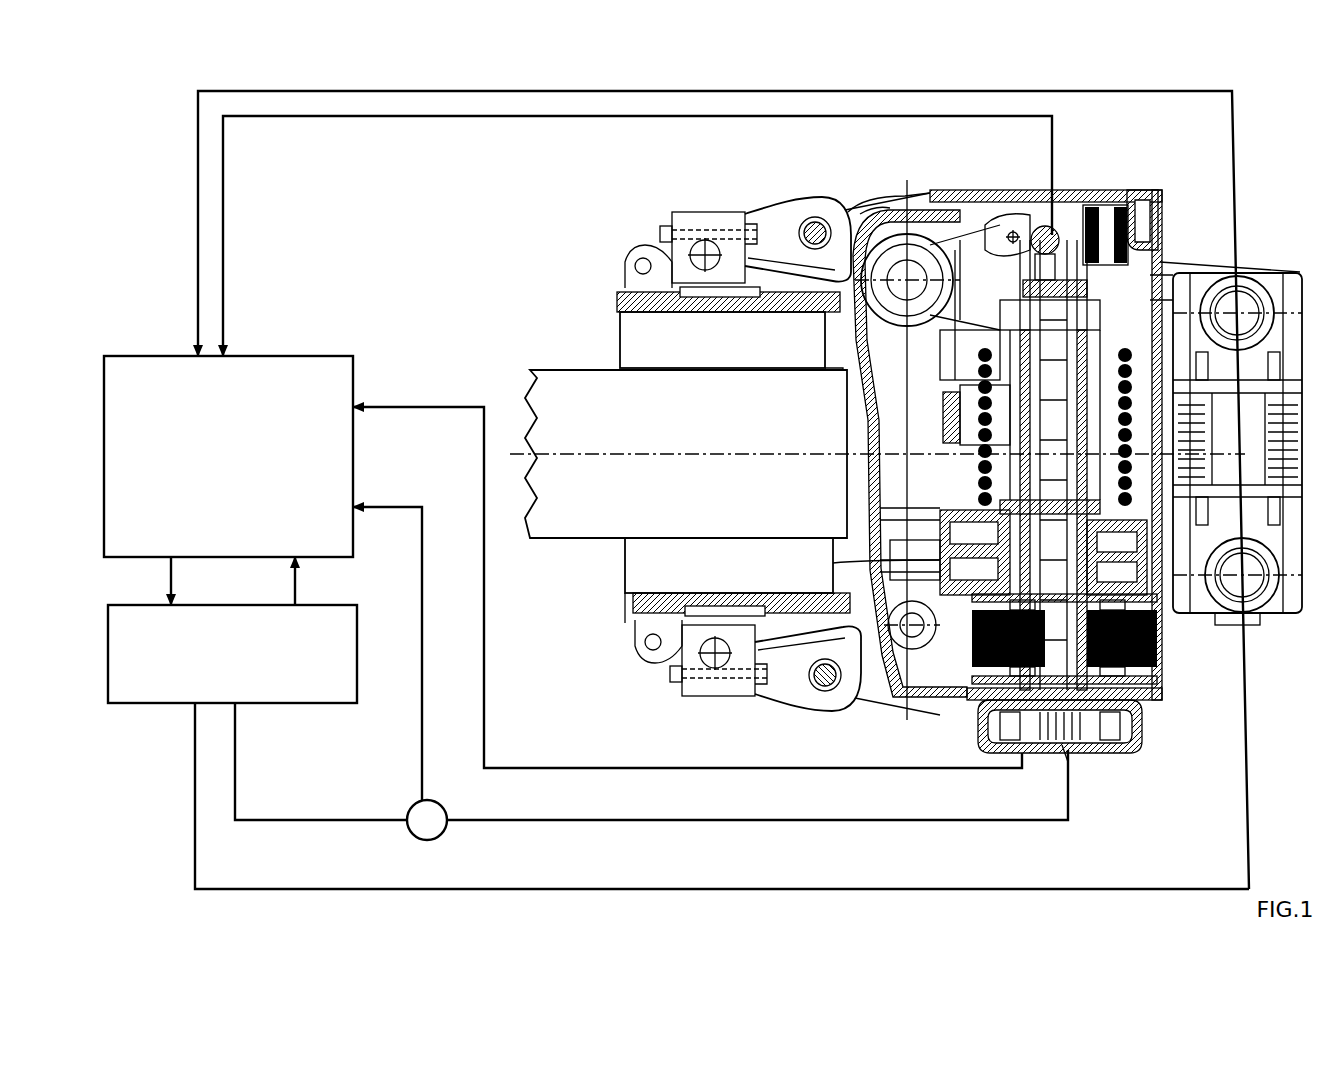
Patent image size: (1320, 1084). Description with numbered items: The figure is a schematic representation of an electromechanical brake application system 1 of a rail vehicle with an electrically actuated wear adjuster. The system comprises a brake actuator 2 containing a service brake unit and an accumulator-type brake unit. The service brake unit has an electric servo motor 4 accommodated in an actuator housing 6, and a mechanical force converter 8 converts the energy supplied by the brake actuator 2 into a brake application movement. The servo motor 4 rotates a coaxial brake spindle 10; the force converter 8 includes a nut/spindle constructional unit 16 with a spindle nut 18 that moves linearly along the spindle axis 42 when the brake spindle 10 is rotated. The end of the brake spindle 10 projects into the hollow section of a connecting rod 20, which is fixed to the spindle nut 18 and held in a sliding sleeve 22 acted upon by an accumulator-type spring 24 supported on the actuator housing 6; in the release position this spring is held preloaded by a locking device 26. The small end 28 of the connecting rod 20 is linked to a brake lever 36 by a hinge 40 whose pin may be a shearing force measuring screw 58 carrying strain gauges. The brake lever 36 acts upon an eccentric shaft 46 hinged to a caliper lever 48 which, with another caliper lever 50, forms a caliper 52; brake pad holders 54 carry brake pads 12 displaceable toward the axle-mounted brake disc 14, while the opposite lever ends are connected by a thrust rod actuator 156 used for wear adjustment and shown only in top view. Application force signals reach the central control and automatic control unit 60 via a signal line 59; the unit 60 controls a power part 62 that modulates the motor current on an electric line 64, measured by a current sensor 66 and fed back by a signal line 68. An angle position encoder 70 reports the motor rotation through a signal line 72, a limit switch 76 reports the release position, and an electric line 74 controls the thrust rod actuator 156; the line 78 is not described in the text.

The electromechanical brake application system 1 is at (600, 202).
The brake actuator 2 is at (1183, 650).
The electric servo motor 4 is at (965, 712).
The actuator housing 6 is at (1156, 236).
The mechanical force converter 8 is at (1107, 160).
The brake spindle 10 is at (945, 416).
The brake pads 12 is at (626, 343).
The axle-mounted brake disc 14 is at (562, 528).
The nut/spindle constructional unit 16 is at (976, 462).
The spindle nut 18 is at (976, 484).
The connecting rod 20 is at (1157, 196).
The sliding sleeve 22 is at (953, 370).
The accumulator-type spring 24 is at (945, 432).
The locking device 26 is at (833, 563).
The small end 28 is at (1075, 265).
The brake lever 36 is at (1000, 215).
The hinge 40 is at (1106, 230).
The spindle axis 42 is at (1068, 760).
The eccentric shaft 46 is at (874, 214).
The caliper lever 48 is at (840, 206).
The caliper lever 50 is at (850, 705).
The caliper 52 is at (605, 310).
The brake pad holders 54 is at (617, 275).
The shearing force measuring screw 58 is at (1036, 226).
The signal line 59 is at (704, 116).
The central control and automatic control unit 60 is at (202, 468).
The power part 62 is at (209, 668).
The electric line 64 is at (663, 822).
The current sensor 66 is at (427, 840).
The signal line 68 is at (422, 660).
The angle position encoder 70 is at (1145, 728).
The signal line 72 is at (570, 768).
The electric line 74 is at (870, 889).
The limit switch 76 is at (907, 415).
The supply line 78 is at (1232, 112).
The thrust rod actuator 156 is at (1286, 610).